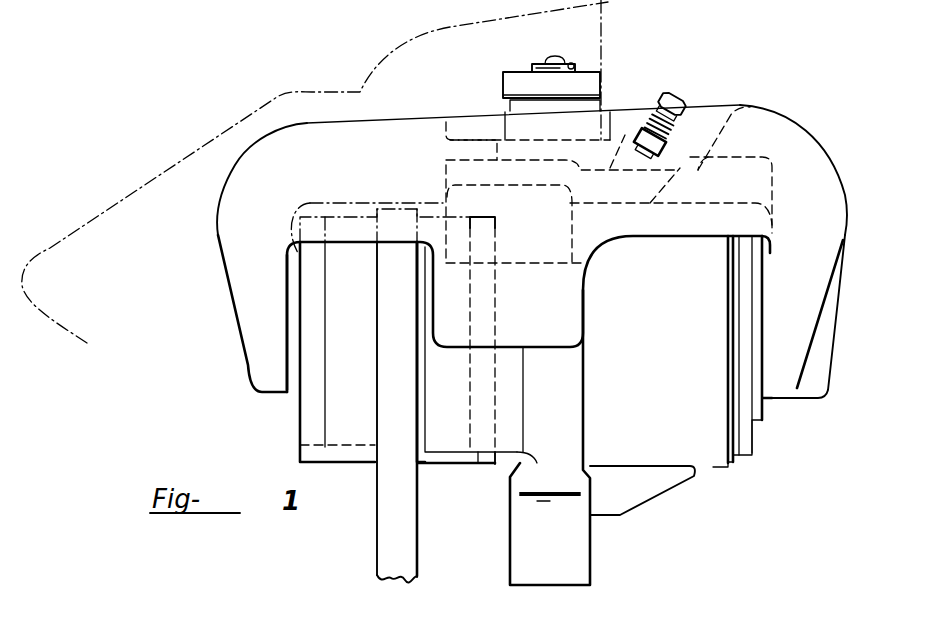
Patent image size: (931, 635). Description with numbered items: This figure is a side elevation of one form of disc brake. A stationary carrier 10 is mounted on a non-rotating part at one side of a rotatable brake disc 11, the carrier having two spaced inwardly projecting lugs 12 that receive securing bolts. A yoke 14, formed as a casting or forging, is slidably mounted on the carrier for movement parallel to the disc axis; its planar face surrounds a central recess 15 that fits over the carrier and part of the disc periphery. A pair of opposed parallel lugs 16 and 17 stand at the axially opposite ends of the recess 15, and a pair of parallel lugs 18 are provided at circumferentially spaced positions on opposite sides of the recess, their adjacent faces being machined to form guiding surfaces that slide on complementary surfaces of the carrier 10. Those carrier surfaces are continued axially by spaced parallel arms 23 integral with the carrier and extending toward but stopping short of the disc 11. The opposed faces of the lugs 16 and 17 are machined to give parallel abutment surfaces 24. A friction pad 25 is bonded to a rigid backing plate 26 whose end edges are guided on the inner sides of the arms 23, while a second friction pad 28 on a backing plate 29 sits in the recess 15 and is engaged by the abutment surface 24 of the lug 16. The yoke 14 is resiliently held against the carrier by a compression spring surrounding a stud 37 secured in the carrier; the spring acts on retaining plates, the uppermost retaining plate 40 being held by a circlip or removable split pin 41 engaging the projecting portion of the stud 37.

The carrier 10 is at (645, 447).
The brake disc 11 is at (382, 562).
The lugs 12 is at (550, 565).
The yoke 14 is at (375, 133).
The central recess 15 is at (345, 208).
The lug 16 is at (262, 364).
The lug 17 is at (793, 375).
The lugs 18 is at (510, 337).
The arms 23 is at (482, 230).
The abutment surfaces 24 is at (295, 398).
The friction pad 25 is at (434, 460).
The backing plate 26 is at (477, 457).
The friction pad 28 is at (355, 453).
The backing plate 29 is at (317, 453).
The stud 37 is at (535, 65).
The retaining plate 40 is at (513, 80).
The split pin 41 is at (578, 65).